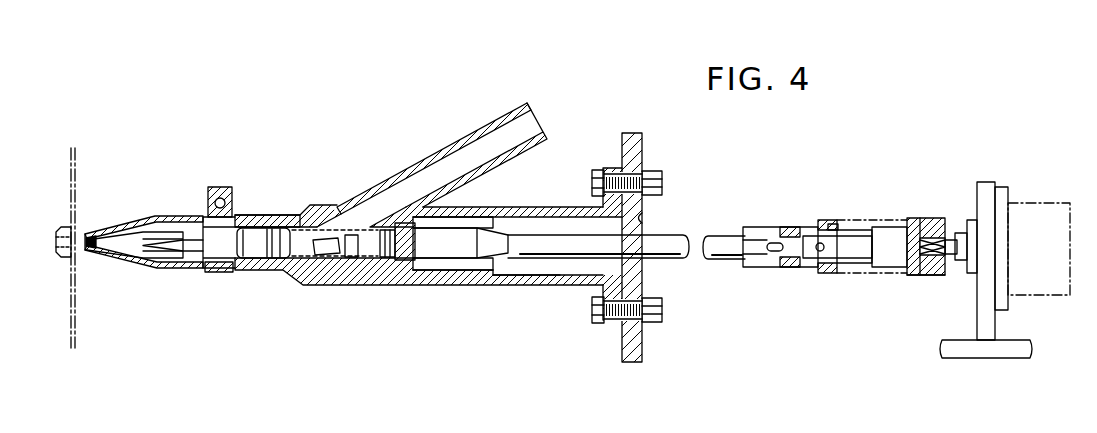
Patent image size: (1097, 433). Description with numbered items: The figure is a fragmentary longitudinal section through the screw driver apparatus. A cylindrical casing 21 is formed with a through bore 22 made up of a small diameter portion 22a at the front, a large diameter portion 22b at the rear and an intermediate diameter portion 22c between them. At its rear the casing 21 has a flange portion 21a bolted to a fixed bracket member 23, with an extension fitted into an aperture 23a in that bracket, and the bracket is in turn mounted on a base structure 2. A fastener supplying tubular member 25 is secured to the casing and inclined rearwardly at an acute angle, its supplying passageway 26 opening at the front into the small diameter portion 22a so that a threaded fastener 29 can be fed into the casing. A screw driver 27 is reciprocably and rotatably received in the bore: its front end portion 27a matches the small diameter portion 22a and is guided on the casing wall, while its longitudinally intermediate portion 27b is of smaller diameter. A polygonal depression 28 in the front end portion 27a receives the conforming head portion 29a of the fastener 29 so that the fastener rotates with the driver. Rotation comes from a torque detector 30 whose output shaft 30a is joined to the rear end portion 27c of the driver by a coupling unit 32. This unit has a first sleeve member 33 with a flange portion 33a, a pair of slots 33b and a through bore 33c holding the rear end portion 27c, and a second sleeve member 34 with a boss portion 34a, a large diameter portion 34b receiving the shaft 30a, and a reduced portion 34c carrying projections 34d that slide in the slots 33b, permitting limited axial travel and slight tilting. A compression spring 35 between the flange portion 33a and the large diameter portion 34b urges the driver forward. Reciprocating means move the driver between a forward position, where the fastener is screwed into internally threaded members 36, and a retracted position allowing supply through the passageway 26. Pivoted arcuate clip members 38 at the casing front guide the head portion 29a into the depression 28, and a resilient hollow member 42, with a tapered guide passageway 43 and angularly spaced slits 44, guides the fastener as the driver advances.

The frame 2 is at (986, 182).
The cylindrical casing 21 is at (324, 286).
The flange portion 21a is at (623, 158).
The through bore 22 is at (217, 240).
The small diameter portion 22a is at (223, 273).
The large diameter portion 22b is at (550, 277).
The intermediate diameter portion 22c is at (454, 274).
The fixed bracket member 23 is at (634, 129).
The aperture 23a is at (699, 233).
The fastener supplying tubular member 25 is at (409, 166).
The supplying passageway 26 is at (464, 160).
The screw driver 27 is at (521, 223).
The front end portion 27a is at (522, 198).
The longitudinally intermediate portion 27b is at (592, 198).
The rear end portion 27c is at (742, 224).
The depression 28 is at (380, 262).
The threaded fastener 29 is at (310, 240).
The head portion 29a is at (357, 235).
The torque detector 30 is at (1023, 202).
The output shaft 30a is at (953, 237).
The coupling unit 32 is at (847, 180).
The first sleeve member 33 is at (775, 219).
The flange portion 33a is at (846, 186).
The slots 33b is at (771, 254).
The through bore 33c is at (825, 211).
The second sleeve member 34 is at (918, 281).
The boss portion 34a is at (923, 198).
The large diameter portion 34b is at (961, 198).
The reduced portion 34c is at (834, 256).
The projections 34d is at (819, 250).
The compression spring 35 is at (833, 227).
The internally threaded members 36 is at (58, 214).
The arcuate clip members 38 is at (239, 227).
The hollow member 42 is at (173, 216).
The guide passageway 43 is at (183, 246).
The slits 44 is at (141, 235).